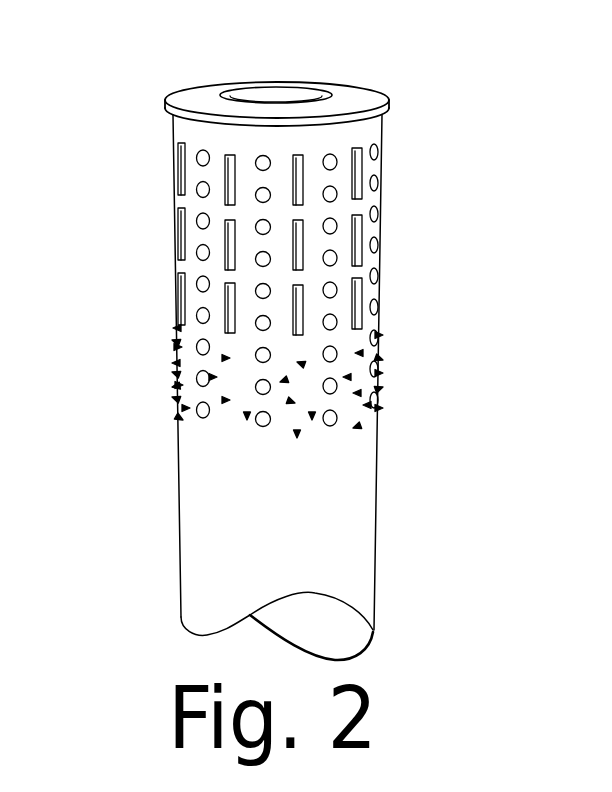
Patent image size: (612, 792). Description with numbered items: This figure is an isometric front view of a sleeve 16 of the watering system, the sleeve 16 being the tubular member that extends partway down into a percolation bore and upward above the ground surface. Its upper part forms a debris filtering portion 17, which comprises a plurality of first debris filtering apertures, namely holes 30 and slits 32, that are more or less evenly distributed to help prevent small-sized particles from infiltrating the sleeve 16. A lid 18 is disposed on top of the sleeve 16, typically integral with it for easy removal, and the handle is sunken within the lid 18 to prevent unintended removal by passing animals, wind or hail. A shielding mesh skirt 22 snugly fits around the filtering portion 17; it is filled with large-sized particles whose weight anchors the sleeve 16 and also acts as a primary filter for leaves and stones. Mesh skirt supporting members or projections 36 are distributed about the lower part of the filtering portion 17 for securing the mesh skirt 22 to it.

The sleeve 16 is at (309, 340).
The debris filtering portion 17 is at (402, 257).
The lid 18 is at (242, 73).
The shielding mesh skirt 22 is at (280, 92).
The holes 30 is at (382, 153).
The slits 32 is at (180, 182).
The mesh skirt supporting members or projections 36 is at (235, 435).